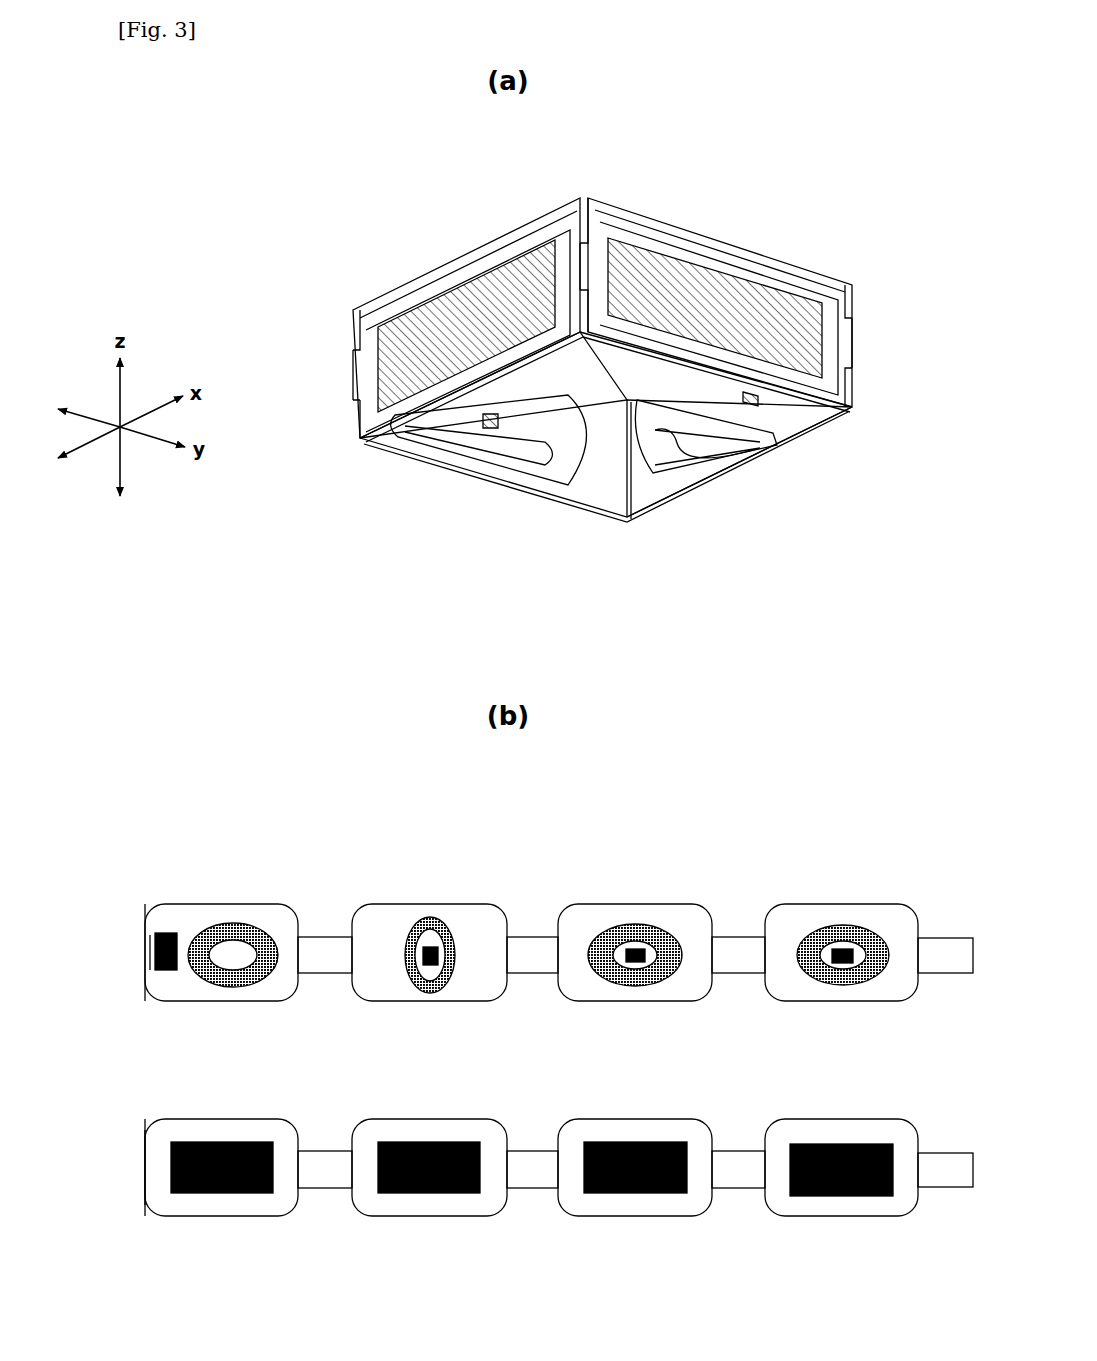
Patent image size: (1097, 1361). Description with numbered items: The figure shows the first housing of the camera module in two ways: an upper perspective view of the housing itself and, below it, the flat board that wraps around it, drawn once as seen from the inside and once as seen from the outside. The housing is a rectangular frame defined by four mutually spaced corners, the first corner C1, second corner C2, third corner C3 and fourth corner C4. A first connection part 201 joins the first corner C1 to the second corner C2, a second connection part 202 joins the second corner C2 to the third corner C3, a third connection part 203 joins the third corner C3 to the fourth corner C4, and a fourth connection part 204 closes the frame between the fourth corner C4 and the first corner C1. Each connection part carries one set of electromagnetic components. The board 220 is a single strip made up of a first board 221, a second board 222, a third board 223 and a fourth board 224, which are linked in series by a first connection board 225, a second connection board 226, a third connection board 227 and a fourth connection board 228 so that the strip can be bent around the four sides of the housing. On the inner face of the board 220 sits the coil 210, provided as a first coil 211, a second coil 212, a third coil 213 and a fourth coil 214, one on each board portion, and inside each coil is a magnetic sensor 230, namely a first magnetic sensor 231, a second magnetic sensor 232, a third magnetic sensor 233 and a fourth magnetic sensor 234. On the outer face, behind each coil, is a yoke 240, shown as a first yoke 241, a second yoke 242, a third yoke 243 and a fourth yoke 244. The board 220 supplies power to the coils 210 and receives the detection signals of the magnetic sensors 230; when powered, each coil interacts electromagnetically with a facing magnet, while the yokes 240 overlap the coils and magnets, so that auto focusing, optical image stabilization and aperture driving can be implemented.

The first connection part 201 is at (458, 262).
The second connection part 202 is at (720, 237).
The third connection part 203 is at (667, 382).
The fourth connection part 204 is at (567, 387).
The coil 210 is at (225, 918).
The first coil 211 is at (248, 930).
The second coil 212 is at (855, 928).
The third coil 213 is at (733, 435).
The fourth coil 214 is at (445, 440).
The board 220 is at (160, 898).
The first board 221 is at (405, 305).
The second board 222 is at (640, 230).
The third board 223 is at (815, 418).
The fourth board 224 is at (600, 500).
The first connection board 225 is at (573, 265).
The second connection board 226 is at (852, 330).
The third connection board 227 is at (525, 963).
The fourth connection board 228 is at (355, 373).
The magnetic sensor 230 is at (153, 958).
The first magnetic sensor 231 is at (153, 937).
The second magnetic sensor 232 is at (840, 945).
The third magnetic sensor 233 is at (750, 400).
The fourth magnetic sensor 234 is at (490, 428).
The yoke 240 is at (208, 1197).
The first yoke 241 is at (390, 397).
The second yoke 242 is at (740, 303).
The third yoke 243 is at (655, 1193).
The fourth yoke 244 is at (450, 1193).
The first corner C1 is at (577, 233).
The second corner C2 is at (855, 287).
The third corner C3 is at (353, 332).
The fourth corner C4 is at (628, 485).